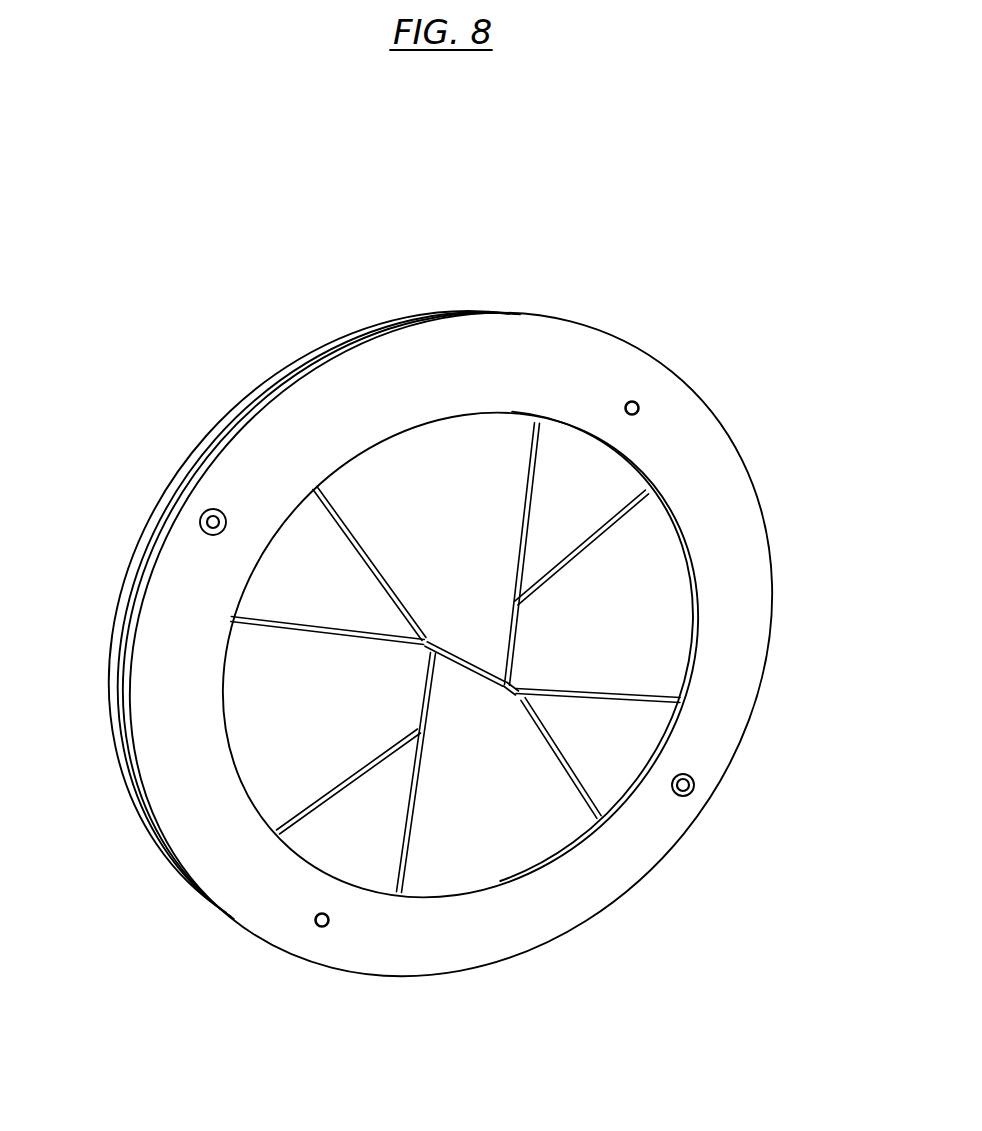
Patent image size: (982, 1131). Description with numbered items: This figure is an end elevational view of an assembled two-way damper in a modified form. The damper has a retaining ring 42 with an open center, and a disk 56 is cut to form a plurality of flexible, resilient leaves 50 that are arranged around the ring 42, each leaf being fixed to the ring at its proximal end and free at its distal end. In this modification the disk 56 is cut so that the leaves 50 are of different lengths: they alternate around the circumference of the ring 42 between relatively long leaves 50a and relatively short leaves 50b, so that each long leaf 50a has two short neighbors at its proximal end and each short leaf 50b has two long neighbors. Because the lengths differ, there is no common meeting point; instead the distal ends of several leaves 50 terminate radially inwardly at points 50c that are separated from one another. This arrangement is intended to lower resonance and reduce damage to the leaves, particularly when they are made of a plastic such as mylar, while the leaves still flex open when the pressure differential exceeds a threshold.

The retaining ring 42 is at (617, 373).
The disk 56 is at (385, 512).
The leaves 50 is at (482, 438).
The relatively long leaves 50a is at (495, 492).
The relatively short leaves 50b is at (610, 500).
The points 50c is at (512, 600).